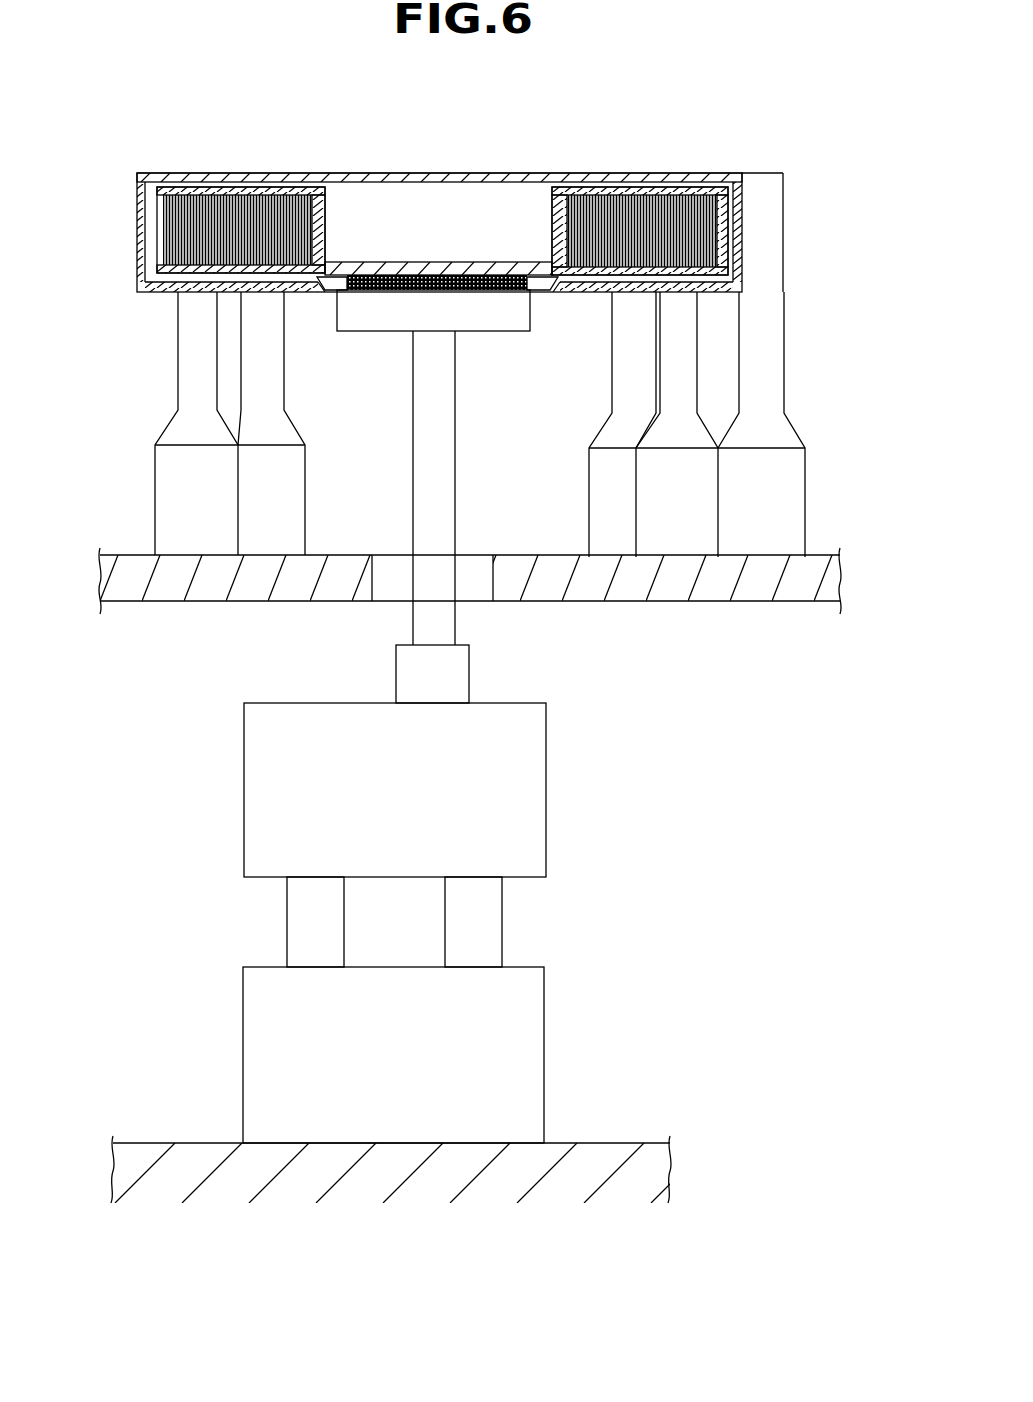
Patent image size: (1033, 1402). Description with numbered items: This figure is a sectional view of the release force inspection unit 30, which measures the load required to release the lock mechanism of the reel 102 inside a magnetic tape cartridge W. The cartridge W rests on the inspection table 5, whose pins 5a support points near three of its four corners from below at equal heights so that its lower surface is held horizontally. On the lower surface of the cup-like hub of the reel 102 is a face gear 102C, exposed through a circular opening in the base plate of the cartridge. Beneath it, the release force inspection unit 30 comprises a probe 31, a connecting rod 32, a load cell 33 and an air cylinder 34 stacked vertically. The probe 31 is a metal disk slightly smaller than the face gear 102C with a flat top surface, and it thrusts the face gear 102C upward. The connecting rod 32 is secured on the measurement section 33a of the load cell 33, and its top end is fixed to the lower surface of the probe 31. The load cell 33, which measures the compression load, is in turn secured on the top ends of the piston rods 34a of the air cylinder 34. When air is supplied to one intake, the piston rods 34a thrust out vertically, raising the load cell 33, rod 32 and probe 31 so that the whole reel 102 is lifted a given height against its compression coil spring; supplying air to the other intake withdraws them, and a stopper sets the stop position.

The magnetic tape cartridge W is at (645, 170).
The reel 102 is at (263, 190).
The face gear 102C is at (390, 282).
The probe 31 is at (495, 310).
The connecting rod 32 is at (438, 482).
The inspection table 5 is at (260, 340).
The pins 5a is at (675, 347).
The release force inspection unit 30 is at (524, 894).
The measurement section 33a is at (443, 674).
The load cell 33 is at (512, 778).
The piston rods 34a is at (312, 928).
The air cylinder 34 is at (508, 1053).